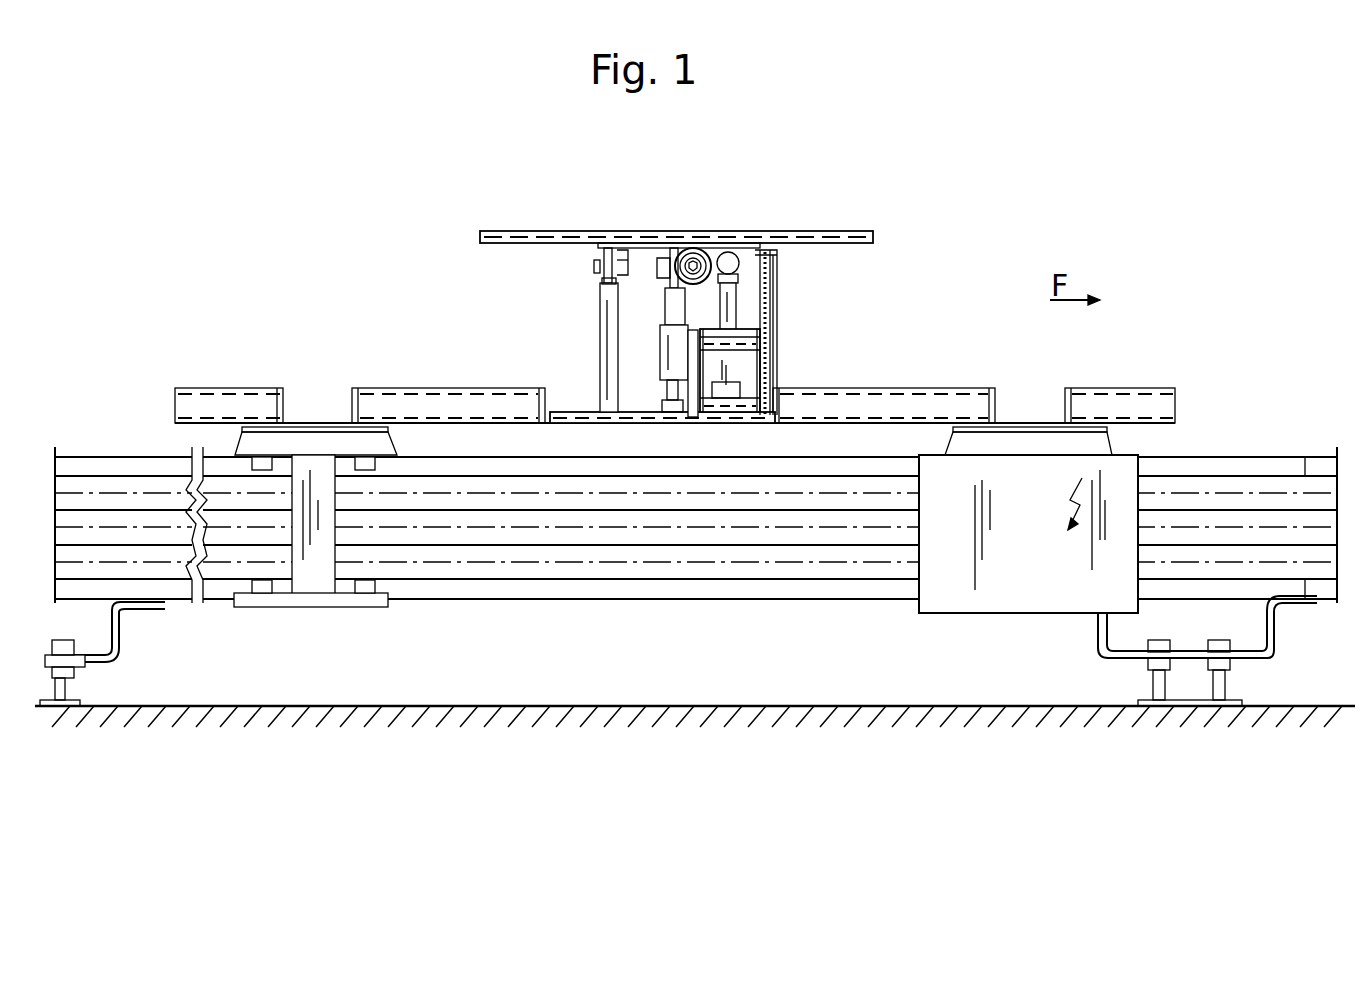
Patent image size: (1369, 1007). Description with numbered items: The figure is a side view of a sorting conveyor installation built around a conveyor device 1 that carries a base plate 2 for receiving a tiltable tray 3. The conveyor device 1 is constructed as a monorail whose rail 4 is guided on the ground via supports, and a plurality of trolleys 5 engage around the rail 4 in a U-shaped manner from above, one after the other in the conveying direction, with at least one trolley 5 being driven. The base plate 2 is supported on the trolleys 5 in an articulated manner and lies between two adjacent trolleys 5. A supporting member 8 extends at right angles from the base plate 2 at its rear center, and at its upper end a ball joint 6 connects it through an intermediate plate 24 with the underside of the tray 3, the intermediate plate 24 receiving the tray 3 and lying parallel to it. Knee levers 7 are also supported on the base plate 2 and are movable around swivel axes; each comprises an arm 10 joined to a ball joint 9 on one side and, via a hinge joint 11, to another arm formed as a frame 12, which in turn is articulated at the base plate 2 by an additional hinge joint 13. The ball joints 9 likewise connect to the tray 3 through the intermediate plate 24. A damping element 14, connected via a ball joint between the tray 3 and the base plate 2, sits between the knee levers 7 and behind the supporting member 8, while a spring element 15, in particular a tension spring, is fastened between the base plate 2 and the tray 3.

The conveyor device 1 is at (568, 672).
The base plate 2 is at (572, 414).
The tiltable tray 3 is at (740, 242).
The rail 4 is at (1262, 470).
The trolley 5 is at (335, 430).
The ball joint 6 is at (600, 258).
The knee lever 7 is at (740, 372).
The supporting member 8 is at (603, 300).
The ball joint 9 is at (716, 255).
The arm 10 is at (740, 275).
The hinge joint 11 is at (696, 322).
The frame 12 is at (757, 355).
The hinge joint 13 is at (760, 406).
The damping element 14 is at (665, 302).
The spring element 15 is at (770, 270).
The intermediate plate 24 is at (655, 246).